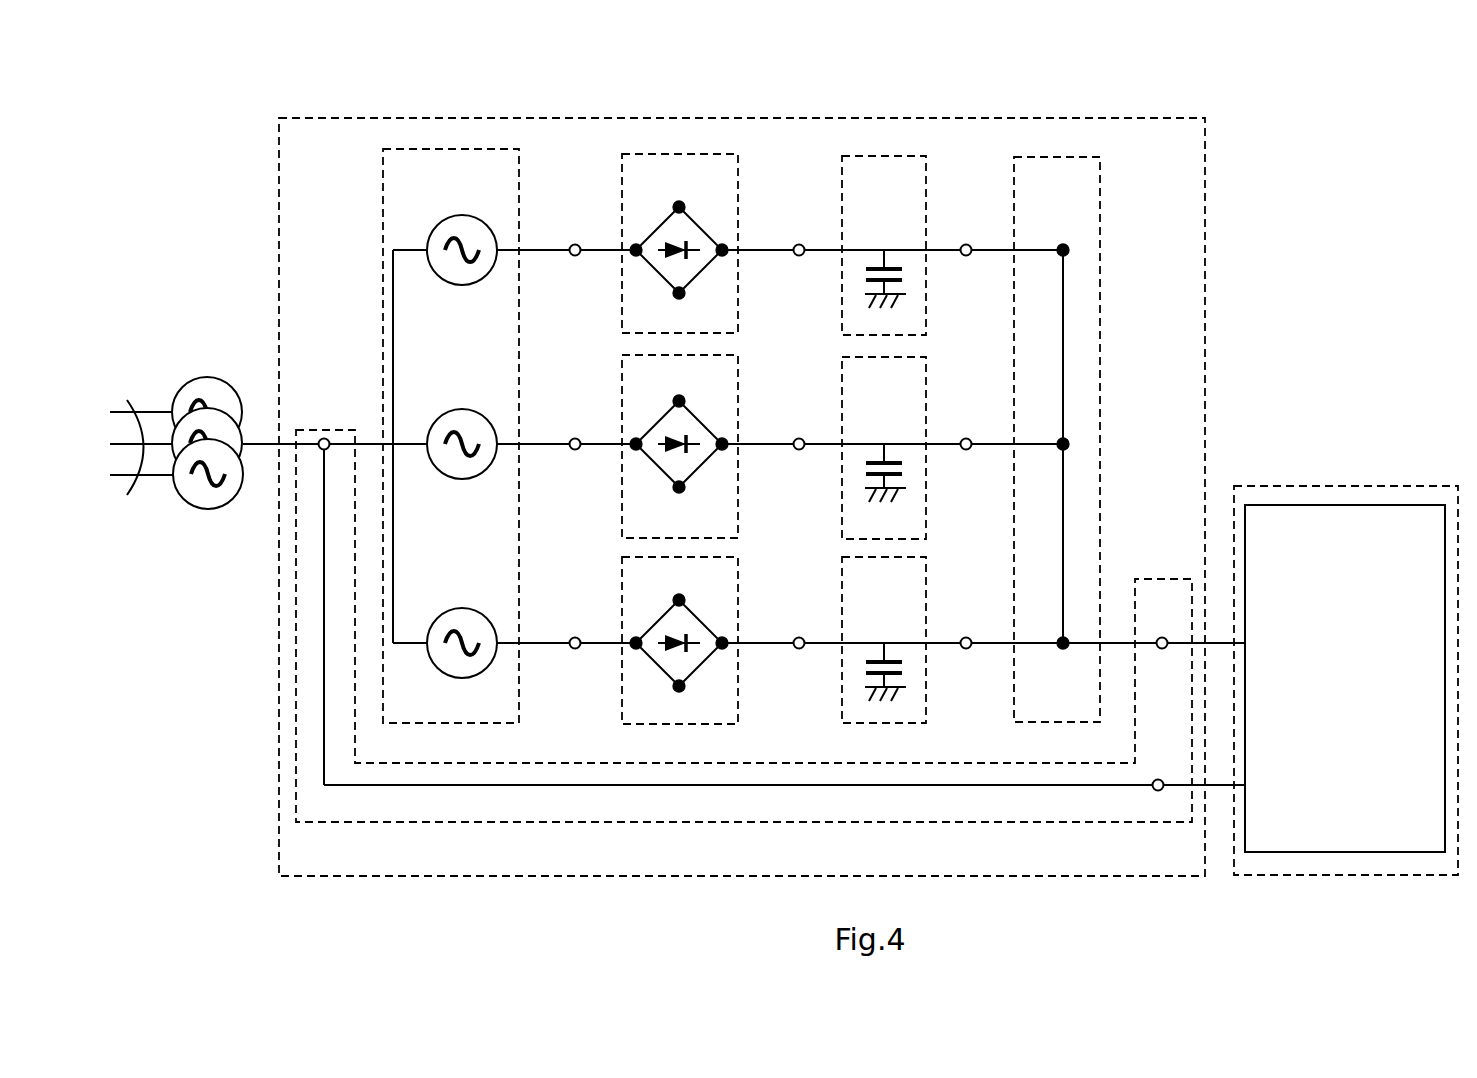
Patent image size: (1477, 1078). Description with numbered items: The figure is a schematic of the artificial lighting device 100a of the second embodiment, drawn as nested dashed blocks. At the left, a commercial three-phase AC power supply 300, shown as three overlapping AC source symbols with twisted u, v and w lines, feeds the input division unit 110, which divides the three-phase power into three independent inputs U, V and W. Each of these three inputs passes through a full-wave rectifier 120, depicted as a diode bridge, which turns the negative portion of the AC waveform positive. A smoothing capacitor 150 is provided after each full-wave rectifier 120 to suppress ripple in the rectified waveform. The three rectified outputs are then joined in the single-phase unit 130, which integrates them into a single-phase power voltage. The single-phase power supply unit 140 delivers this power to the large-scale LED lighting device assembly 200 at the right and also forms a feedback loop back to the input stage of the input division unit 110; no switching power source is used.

The artificial lighting device 100a is at (1143, 118).
The input division unit 110 is at (445, 149).
The full-wave rectifier 120 is at (675, 155).
The smoothing capacitor 150 is at (880, 157).
The single-phase unit 130 is at (1047, 157).
The single-phase power supply unit 140 is at (1170, 579).
The large-scale LED lighting device assembly 200 is at (1315, 486).
The commercial three-phase AC power supply 300 is at (190, 380).